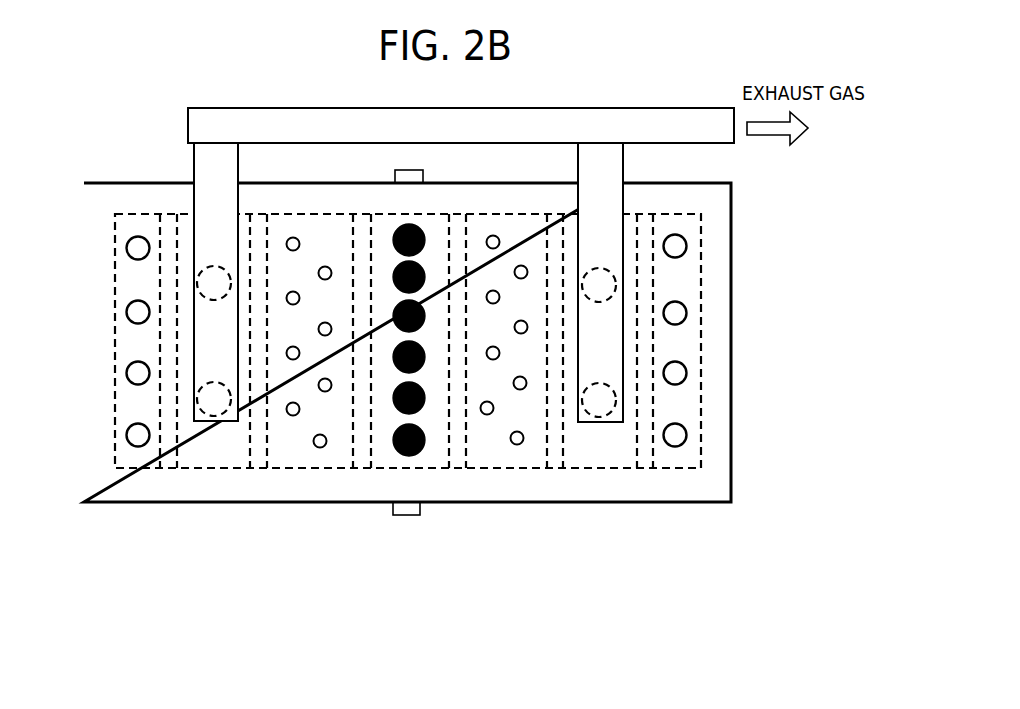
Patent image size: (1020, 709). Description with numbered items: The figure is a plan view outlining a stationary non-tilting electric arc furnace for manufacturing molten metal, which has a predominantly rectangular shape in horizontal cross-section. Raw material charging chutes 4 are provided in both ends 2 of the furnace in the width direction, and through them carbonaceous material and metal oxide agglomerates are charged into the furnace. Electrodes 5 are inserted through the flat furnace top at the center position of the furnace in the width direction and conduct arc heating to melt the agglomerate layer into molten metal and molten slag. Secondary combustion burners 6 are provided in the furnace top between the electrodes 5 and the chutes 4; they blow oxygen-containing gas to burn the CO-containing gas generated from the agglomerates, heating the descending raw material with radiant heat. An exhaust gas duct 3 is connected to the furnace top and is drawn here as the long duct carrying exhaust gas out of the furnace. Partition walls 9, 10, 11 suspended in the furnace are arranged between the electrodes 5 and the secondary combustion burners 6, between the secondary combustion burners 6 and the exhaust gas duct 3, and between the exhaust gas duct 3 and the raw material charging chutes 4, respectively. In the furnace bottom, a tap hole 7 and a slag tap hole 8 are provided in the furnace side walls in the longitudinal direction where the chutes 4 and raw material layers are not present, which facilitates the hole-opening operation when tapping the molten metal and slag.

The ends of the furnace in the width direction 2 is at (114, 357).
The exhaust gas duct 3 is at (213, 421).
The raw material charging chutes 4 is at (126, 246).
The electrodes 5 is at (425, 448).
The secondary combustion burners 6 is at (320, 447).
The tap hole 7 is at (407, 515).
The slag tap hole 8 is at (418, 168).
The partition wall 9 is at (358, 458).
The partition wall 10 is at (258, 457).
The partition wall 11 is at (167, 460).